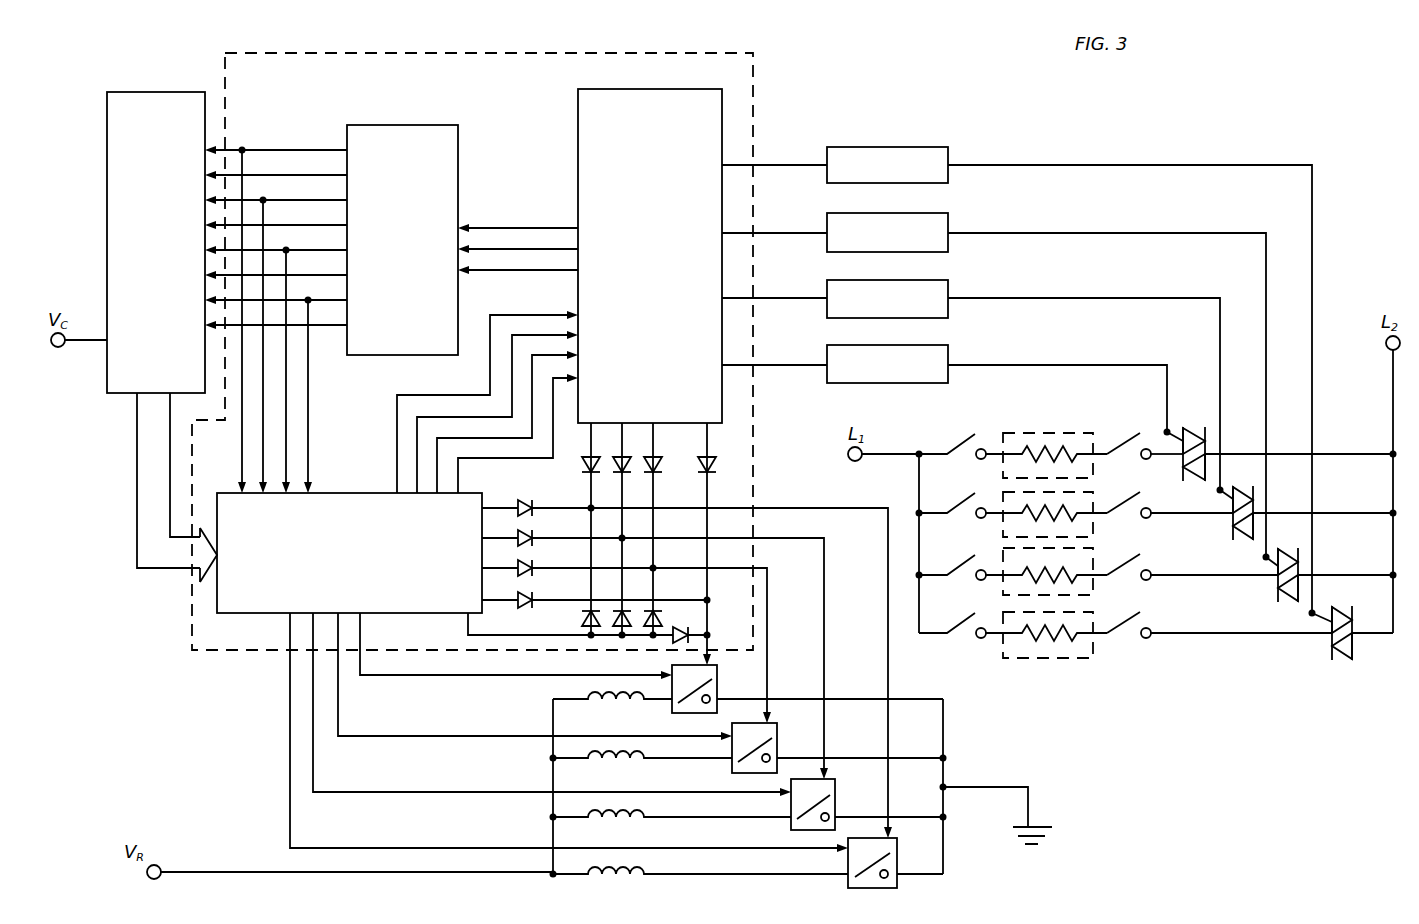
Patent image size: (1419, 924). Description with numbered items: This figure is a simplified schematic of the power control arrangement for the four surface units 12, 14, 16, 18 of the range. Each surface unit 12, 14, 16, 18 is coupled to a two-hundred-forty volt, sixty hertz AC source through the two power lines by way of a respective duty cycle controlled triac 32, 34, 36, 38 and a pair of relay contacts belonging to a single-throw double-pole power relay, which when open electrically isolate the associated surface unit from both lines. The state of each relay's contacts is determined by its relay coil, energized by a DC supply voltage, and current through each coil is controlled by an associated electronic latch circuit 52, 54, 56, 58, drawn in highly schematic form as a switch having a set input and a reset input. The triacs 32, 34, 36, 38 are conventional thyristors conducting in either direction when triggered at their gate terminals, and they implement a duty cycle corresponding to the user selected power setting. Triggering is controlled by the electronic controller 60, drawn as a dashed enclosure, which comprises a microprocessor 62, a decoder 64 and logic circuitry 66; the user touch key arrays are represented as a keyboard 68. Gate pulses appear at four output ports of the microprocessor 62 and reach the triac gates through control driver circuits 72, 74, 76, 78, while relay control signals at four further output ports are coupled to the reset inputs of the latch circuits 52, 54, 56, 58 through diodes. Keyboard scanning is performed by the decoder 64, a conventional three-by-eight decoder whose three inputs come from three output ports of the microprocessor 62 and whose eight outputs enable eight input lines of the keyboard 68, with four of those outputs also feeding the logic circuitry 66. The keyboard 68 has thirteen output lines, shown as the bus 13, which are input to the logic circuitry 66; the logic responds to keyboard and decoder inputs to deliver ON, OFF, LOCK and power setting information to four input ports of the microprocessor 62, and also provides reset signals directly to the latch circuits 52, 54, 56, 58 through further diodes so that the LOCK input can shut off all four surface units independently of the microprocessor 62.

The surface unit 12 is at (1018, 433).
The data bus 13 is at (177, 487).
The surface unit 14 is at (1095, 492).
The surface unit 16 is at (1003, 592).
The surface unit 18 is at (1050, 660).
The triac 32 is at (1195, 427).
The triac 34 is at (1233, 535).
The triac 36 is at (1278, 590).
The triac 38 is at (1332, 648).
The latch circuit 52 is at (717, 690).
The latch circuit 54 is at (777, 740).
The latch circuit 56 is at (835, 792).
The latch circuit 58 is at (897, 851).
The electronic controller 60 is at (757, 100).
The microprocessor 62 is at (662, 89).
The decoder 64 is at (440, 125).
The logic circuitry 66 is at (335, 493).
The keyboard 68 is at (176, 82).
The control driver circuit 72 is at (948, 347).
The control driver circuit 74 is at (948, 282).
The control driver circuit 76 is at (948, 215).
The control driver circuit 78 is at (912, 147).